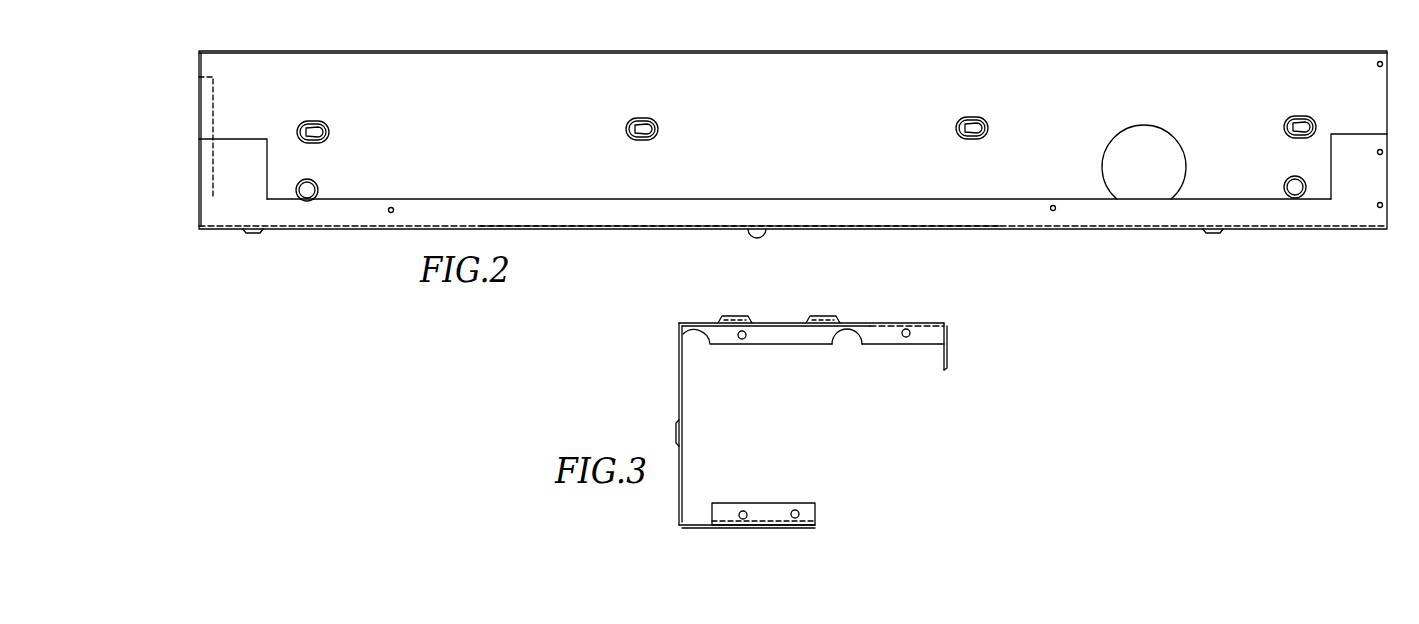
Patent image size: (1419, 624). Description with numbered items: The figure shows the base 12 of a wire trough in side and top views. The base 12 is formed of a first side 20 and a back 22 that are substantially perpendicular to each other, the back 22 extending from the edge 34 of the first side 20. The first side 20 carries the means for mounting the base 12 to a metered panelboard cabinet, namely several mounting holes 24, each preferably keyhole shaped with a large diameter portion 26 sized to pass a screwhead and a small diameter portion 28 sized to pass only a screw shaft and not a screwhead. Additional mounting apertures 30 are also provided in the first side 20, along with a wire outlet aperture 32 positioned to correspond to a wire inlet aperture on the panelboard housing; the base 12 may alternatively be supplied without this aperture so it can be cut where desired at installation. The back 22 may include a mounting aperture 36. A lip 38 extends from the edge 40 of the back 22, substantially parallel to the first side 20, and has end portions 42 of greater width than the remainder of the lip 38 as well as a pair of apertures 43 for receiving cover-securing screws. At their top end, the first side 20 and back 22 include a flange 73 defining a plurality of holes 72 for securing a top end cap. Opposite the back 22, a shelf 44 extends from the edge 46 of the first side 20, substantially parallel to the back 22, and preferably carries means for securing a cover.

In FIG. 2, the base 12 is at (1037, 39).
In FIG. 3, the base 12 is at (905, 420).
In FIG. 2, the first side 20 is at (435, 88).
In FIG. 3, the first side 20 is at (868, 323).
In FIG. 2, the back 22 is at (749, 224).
In FIG. 3, the back 22 is at (679, 352).
In FIG. 2, the mounting hole 24 is at (316, 121).
In FIG. 3, the mounting hole 24 is at (822, 316).
In FIG. 2, the large diameter portion 26 is at (329, 132).
In FIG. 2, the small diameter portion 28 is at (297, 132).
In FIG. 2, the mounting aperture 30 is at (316, 184).
In FIG. 2, the wire outlet aperture 32 is at (1130, 132).
In FIG. 3, the edge 34 is at (680, 323).
In FIG. 3, the mounting aperture 36 is at (676, 430).
In FIG. 2, the lip 38 is at (622, 228).
In FIG. 3, the lip 38 is at (765, 525).
In FIG. 3, the edge 40 is at (679, 527).
In FIG. 2, the end portion 42 is at (228, 187).
In FIG. 2, the aperture 43 is at (392, 207).
In FIG. 3, the shelf 44 is at (948, 352).
In FIG. 3, the edge 46 is at (946, 323).
In FIG. 3, the hole 72 is at (745, 339).
In FIG. 3, the flange 73 is at (810, 503).